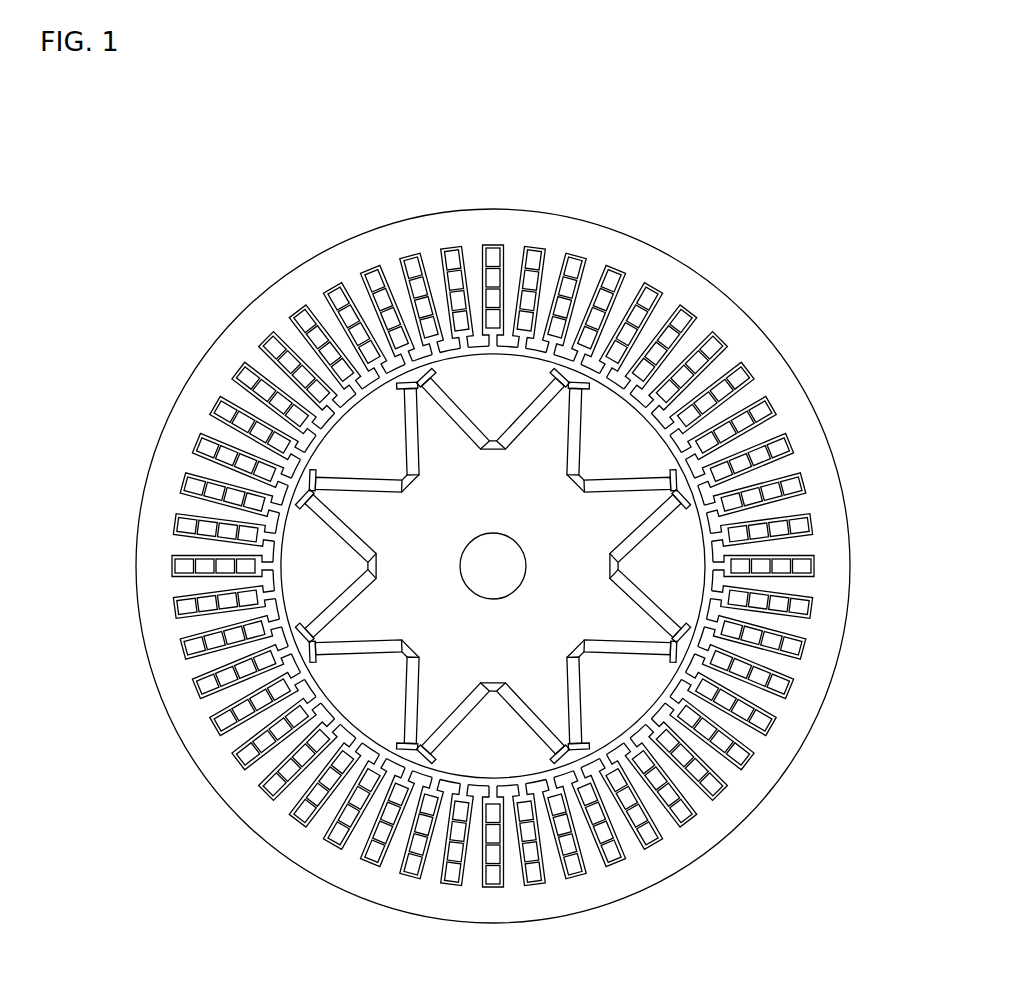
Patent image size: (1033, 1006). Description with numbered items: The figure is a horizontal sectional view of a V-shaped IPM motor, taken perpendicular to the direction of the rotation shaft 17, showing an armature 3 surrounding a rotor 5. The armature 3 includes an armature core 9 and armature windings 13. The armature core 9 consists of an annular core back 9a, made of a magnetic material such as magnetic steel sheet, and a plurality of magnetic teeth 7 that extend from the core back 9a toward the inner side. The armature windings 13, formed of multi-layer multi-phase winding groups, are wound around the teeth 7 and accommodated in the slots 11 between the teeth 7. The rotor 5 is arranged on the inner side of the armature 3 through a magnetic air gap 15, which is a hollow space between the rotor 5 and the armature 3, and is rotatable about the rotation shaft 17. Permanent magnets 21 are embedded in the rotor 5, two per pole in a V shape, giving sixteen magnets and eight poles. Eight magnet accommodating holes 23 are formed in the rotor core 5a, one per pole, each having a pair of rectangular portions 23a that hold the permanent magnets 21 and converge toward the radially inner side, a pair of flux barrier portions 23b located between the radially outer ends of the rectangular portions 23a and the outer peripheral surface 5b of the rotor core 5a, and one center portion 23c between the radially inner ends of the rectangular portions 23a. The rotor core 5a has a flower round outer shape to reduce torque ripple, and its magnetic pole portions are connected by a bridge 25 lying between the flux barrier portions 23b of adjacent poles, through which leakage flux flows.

The armature 3 is at (678, 250).
The rotor 5 is at (686, 496).
The rotor core 5a is at (540, 698).
The outer peripheral surface 5b is at (640, 418).
The teeth 7 is at (400, 318).
The armature core 9 is at (372, 230).
The core back 9a is at (350, 262).
The slots 11 is at (358, 378).
The armature windings 13 is at (307, 317).
The magnetic air gap 15 is at (413, 760).
The rotation shaft 17 is at (490, 584).
The permanent magnets 21 is at (453, 338).
The magnet accommodating holes 23 is at (530, 298).
The rectangular portions 23a is at (450, 412).
The flux barrier portions 23b is at (458, 399).
The center portion 23c is at (512, 456).
The bridge 25 is at (578, 370).